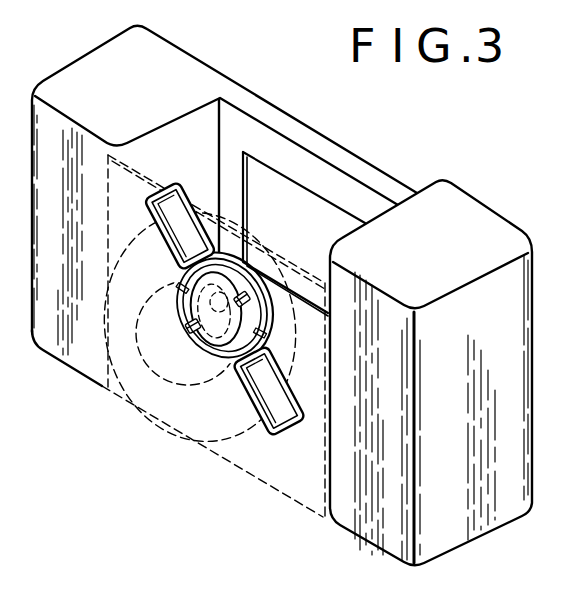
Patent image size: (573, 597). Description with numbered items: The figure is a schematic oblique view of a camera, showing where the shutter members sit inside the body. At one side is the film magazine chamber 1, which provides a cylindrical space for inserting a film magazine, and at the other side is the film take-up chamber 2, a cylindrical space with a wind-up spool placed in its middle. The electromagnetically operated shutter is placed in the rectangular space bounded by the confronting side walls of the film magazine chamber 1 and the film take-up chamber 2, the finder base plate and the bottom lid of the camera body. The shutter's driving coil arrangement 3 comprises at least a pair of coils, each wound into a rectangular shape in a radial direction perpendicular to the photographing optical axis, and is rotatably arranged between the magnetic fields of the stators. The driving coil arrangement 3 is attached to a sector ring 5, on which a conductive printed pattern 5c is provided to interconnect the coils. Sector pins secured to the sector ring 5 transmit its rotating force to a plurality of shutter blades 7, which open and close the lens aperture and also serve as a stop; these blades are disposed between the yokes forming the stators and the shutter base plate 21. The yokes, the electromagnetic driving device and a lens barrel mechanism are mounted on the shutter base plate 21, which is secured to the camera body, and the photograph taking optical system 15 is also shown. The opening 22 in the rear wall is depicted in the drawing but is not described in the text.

The casing block (right) 1 is at (392, 533).
The casing block (left) with back wall 2 is at (73, 338).
The operating arm 3 is at (279, 432).
The rotary ring 5 is at (245, 256).
The raised flange of rotary ring 5c is at (239, 272).
The tab / contact piece 7 is at (250, 303).
The hidden disc member 15 is at (172, 353).
The hidden panel plate 21 is at (128, 187).
The recess in back wall 22 is at (345, 212).